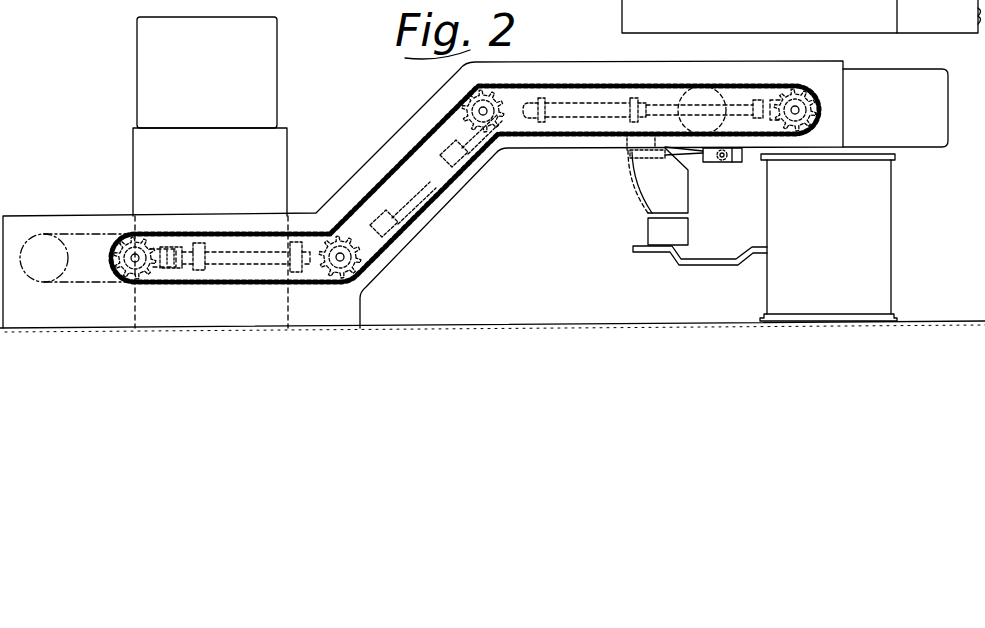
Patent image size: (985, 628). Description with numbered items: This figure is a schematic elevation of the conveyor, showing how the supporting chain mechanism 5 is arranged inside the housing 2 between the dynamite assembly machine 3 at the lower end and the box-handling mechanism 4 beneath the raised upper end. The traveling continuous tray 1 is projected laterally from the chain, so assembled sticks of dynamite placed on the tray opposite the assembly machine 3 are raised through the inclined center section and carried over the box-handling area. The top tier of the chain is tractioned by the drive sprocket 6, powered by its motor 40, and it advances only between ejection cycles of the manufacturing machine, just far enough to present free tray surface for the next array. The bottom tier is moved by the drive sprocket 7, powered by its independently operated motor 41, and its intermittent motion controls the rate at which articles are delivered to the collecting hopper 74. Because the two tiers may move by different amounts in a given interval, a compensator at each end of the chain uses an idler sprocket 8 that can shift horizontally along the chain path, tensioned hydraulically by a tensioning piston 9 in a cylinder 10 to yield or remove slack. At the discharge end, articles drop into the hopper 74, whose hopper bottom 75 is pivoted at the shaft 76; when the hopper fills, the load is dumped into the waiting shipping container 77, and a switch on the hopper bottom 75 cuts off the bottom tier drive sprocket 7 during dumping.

The traveling continuous tray 1 is at (407, 143).
The housing 2 is at (74, 214).
The dynamite assembly machine 3 is at (149, 88).
The box-handling mechanism 4 is at (747, 240).
The supporting chain mechanism 5 is at (487, 148).
The drive sprocket 6 is at (488, 95).
The drive sprocket 7 is at (333, 232).
The idler sprocket 8 is at (122, 272).
The tensioning piston 9 is at (181, 268).
The cylinder 10 is at (262, 264).
The motor 40 is at (443, 151).
The motor 41 is at (380, 213).
The collecting hopper 74 is at (645, 187).
The hopper bottom 75 is at (630, 170).
The shaft 76 is at (725, 163).
The shipping container 77 is at (650, 232).